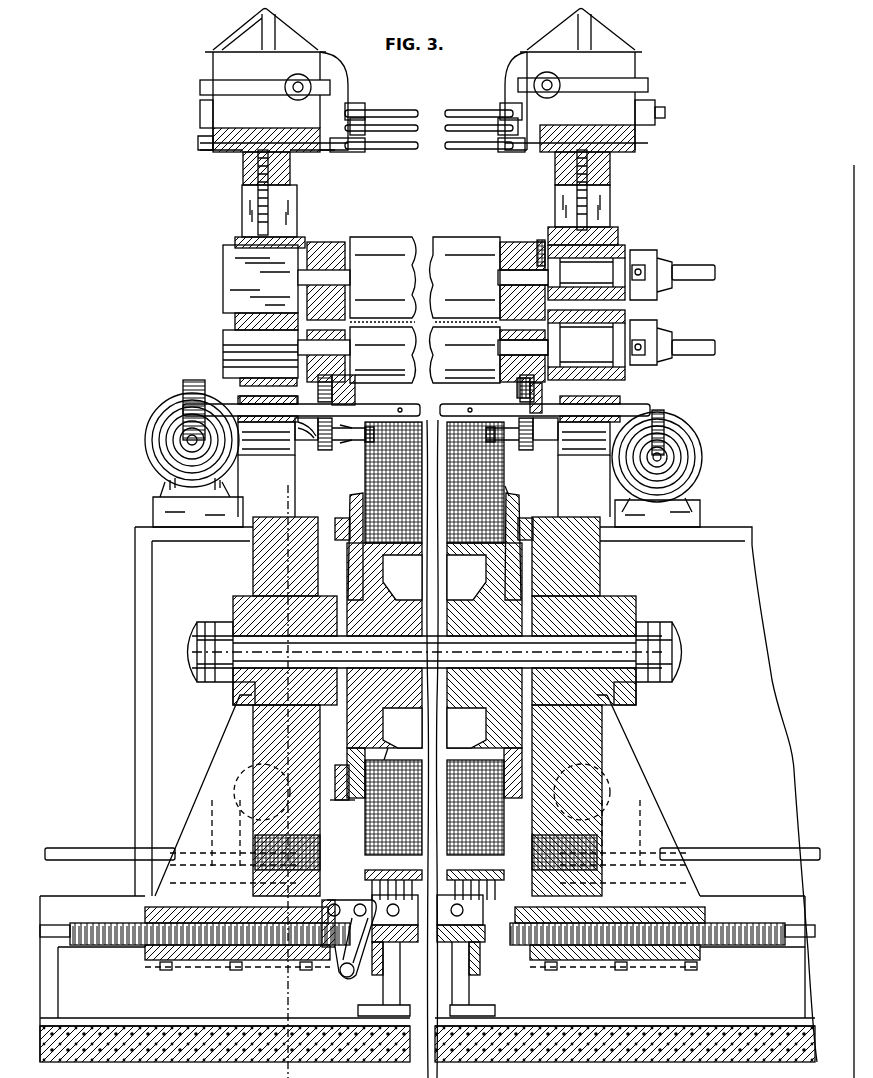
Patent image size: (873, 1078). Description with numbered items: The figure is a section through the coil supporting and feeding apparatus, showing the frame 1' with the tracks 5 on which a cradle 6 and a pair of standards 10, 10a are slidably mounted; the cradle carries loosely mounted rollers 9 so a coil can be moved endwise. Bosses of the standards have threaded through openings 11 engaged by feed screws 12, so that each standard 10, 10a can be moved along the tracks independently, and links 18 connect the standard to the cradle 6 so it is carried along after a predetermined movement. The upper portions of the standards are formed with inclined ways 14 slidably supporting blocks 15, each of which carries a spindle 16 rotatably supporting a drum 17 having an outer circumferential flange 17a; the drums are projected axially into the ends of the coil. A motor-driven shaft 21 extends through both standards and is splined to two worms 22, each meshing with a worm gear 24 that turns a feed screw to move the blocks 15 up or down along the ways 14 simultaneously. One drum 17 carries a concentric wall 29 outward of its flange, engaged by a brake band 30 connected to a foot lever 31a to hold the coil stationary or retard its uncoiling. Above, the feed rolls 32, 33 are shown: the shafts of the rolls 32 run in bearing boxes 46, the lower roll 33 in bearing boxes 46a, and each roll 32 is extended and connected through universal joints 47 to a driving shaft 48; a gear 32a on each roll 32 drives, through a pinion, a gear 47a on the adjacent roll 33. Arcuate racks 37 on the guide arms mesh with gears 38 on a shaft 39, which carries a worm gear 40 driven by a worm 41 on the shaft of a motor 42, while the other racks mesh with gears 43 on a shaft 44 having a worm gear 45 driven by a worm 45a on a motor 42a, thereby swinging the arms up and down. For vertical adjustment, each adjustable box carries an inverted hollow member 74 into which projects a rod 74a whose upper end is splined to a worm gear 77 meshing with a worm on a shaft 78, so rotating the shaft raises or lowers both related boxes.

The frame 1' is at (447, 621).
The tracks 5 is at (106, 1005).
The cradle 6 is at (462, 998).
The rollers 9 is at (470, 897).
The standard 10 is at (199, 796).
The standard 10a is at (655, 802).
The through openings 11 is at (200, 952).
The feed screws 12 is at (114, 948).
The ways 14 is at (258, 606).
The blocks 15 is at (238, 693).
The spindle 16 is at (230, 640).
The drum 17 is at (406, 742).
The circumferential flange 17a is at (346, 530).
The links 18 is at (343, 976).
The shaft 21 is at (100, 848).
The worms 22 is at (212, 885).
The worm gear 24 is at (250, 792).
The concentric wall 29 is at (258, 555).
The brake band 30 is at (322, 515).
The foot lever 31a is at (342, 802).
The feed rolls 32 is at (465, 245).
The gear 32a is at (541, 240).
The feed rolls 33 is at (456, 383).
The arcuate rack 37 is at (318, 390).
The gears 38 is at (322, 449).
The shaft 39 is at (365, 440).
The worm gear 40 is at (662, 412).
The worm 41 is at (655, 255).
The motor 42 is at (700, 445).
The motor 42a is at (160, 412).
The gears 43 is at (345, 442).
The shaft 44 is at (397, 404).
The worm gear 45 is at (192, 380).
The worm 45a is at (187, 442).
The bearing boxes 46 is at (222, 282).
The bearing boxes 46a is at (222, 340).
The universal joints 47 is at (655, 325).
The gear 47a is at (539, 395).
The shaft 48 is at (698, 265).
The inverted hollow member 74 is at (241, 233).
The rod 74a is at (276, 205).
The worm gear 77 is at (238, 160).
The shaft 78 is at (388, 142).